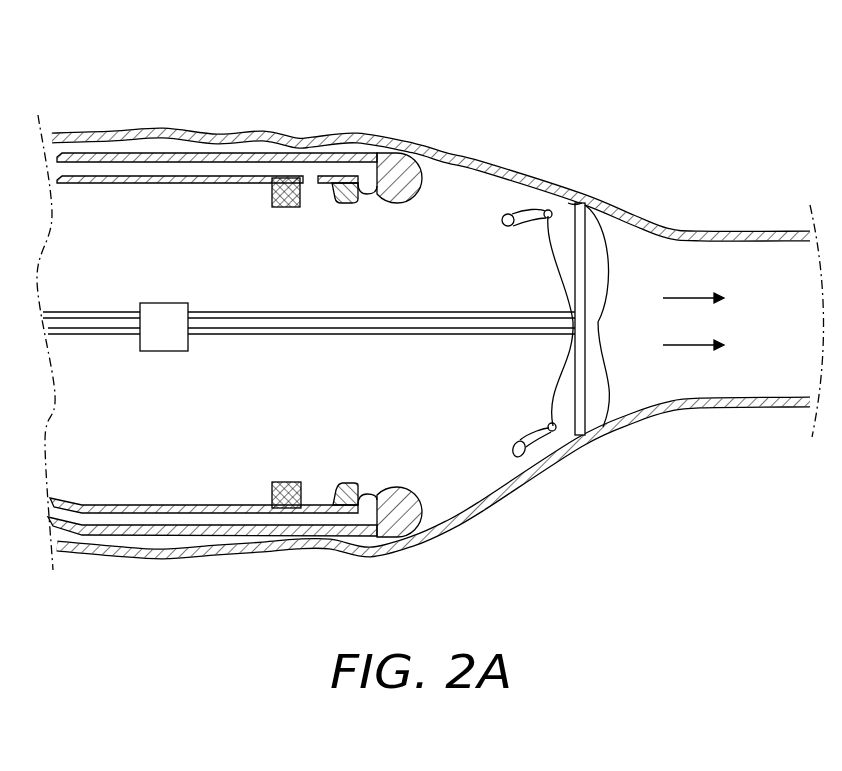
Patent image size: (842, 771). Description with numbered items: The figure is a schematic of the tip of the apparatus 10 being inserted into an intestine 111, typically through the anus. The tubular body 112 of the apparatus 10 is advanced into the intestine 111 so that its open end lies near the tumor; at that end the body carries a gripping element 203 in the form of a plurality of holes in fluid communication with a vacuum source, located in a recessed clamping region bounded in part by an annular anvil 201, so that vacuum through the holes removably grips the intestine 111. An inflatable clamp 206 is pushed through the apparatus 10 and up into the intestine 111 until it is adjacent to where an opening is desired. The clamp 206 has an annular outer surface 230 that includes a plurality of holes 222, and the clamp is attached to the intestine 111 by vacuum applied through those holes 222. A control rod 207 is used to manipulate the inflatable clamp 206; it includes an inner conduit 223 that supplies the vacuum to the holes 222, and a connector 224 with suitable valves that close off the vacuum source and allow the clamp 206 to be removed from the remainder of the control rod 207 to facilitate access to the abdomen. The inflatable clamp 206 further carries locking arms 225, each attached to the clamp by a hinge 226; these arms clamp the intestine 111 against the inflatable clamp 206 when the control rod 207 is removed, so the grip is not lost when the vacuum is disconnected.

The apparatus 10 is at (246, 96).
The intestine 111 is at (83, 132).
The tubular body 112 is at (158, 153).
The anvil 201 is at (287, 208).
The gripping element 203 is at (312, 178).
The inflatable clamp 206 is at (608, 310).
The control rod 207 is at (370, 334).
The plurality of holes 222 is at (580, 200).
The inner conduit 223 is at (393, 312).
The connector 224 is at (165, 303).
The locking arms 225 is at (510, 228).
The hinge 226 is at (563, 200).
The annular outer surface 230 is at (568, 198).